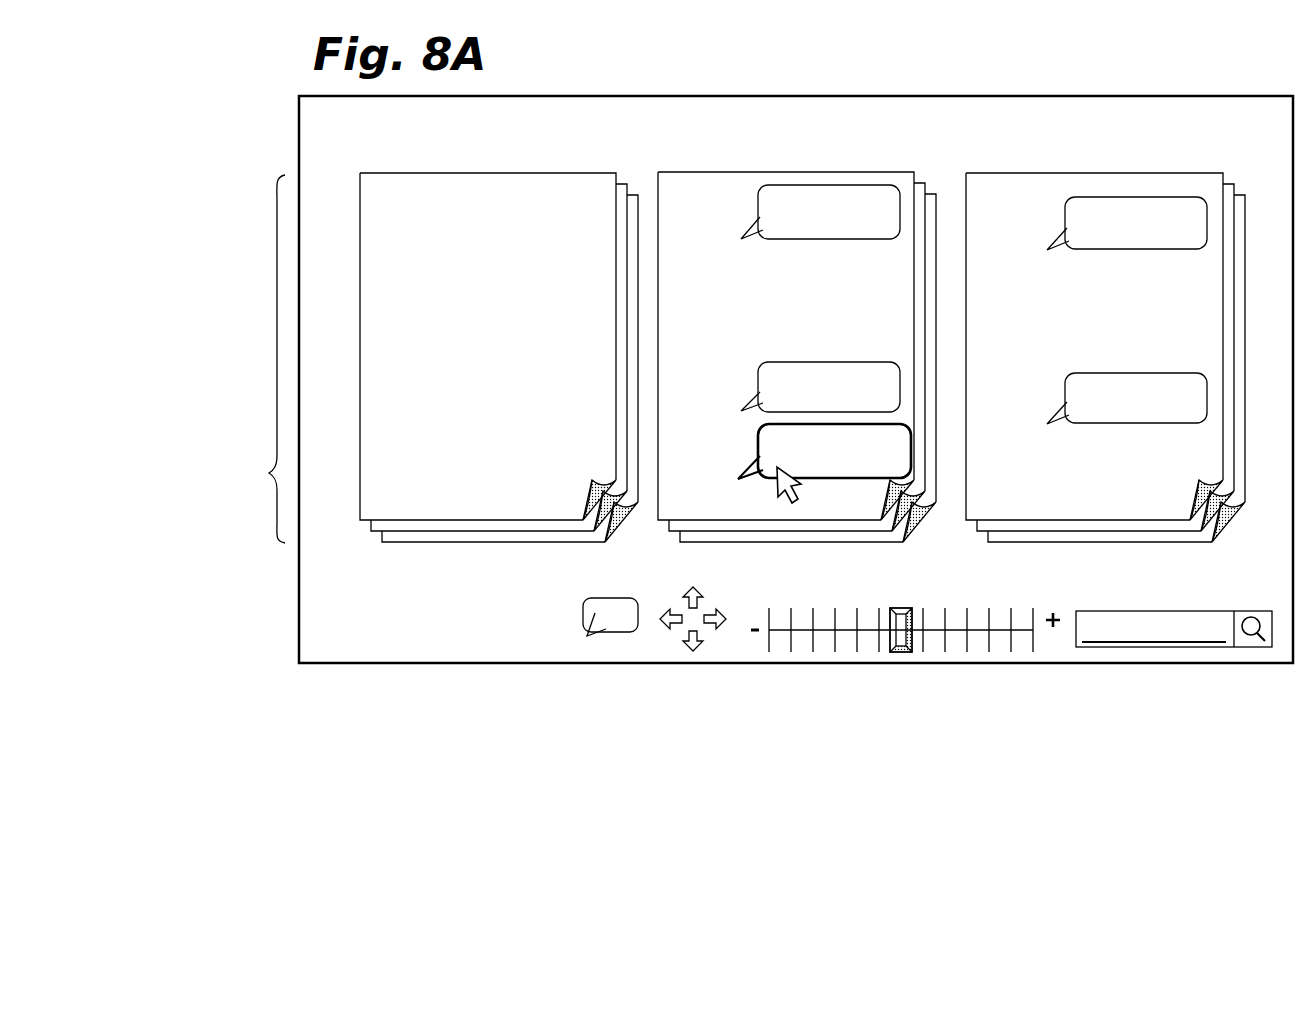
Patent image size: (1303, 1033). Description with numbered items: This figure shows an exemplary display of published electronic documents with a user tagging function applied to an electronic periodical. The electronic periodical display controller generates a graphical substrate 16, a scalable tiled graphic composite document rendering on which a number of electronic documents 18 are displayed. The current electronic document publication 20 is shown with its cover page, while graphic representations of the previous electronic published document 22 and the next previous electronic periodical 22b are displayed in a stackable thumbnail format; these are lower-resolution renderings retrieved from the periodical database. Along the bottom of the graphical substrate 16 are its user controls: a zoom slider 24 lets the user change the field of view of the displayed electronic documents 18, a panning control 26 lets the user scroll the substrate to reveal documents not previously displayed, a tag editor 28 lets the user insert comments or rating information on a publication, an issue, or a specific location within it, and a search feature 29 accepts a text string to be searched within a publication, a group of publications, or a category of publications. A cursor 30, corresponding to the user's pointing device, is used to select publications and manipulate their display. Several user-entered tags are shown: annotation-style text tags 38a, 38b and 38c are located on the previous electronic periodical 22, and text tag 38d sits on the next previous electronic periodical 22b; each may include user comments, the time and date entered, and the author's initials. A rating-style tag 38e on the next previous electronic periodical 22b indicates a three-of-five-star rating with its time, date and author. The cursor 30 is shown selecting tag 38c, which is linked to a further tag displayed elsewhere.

The graphical substrate 16 is at (322, 664).
The electronic documents 18 is at (742, 357).
The current electronic document publication 20 is at (484, 440).
The previous electronic published document 22 is at (744, 316).
The next previous electronic periodical 22b is at (1090, 440).
The zoom slider 24 is at (900, 652).
The panning control 26 is at (693, 652).
The tag editor 28 is at (585, 629).
The search feature 29 is at (1185, 648).
The cursor 30 is at (801, 486).
The annotation-style text tag 38a is at (743, 237).
The annotation-style text tag 38b is at (741, 405).
The annotation-style text tag 38c is at (740, 473).
The annotation-style text tag 38d is at (1051, 246).
The rating-style tag 38e is at (1052, 420).